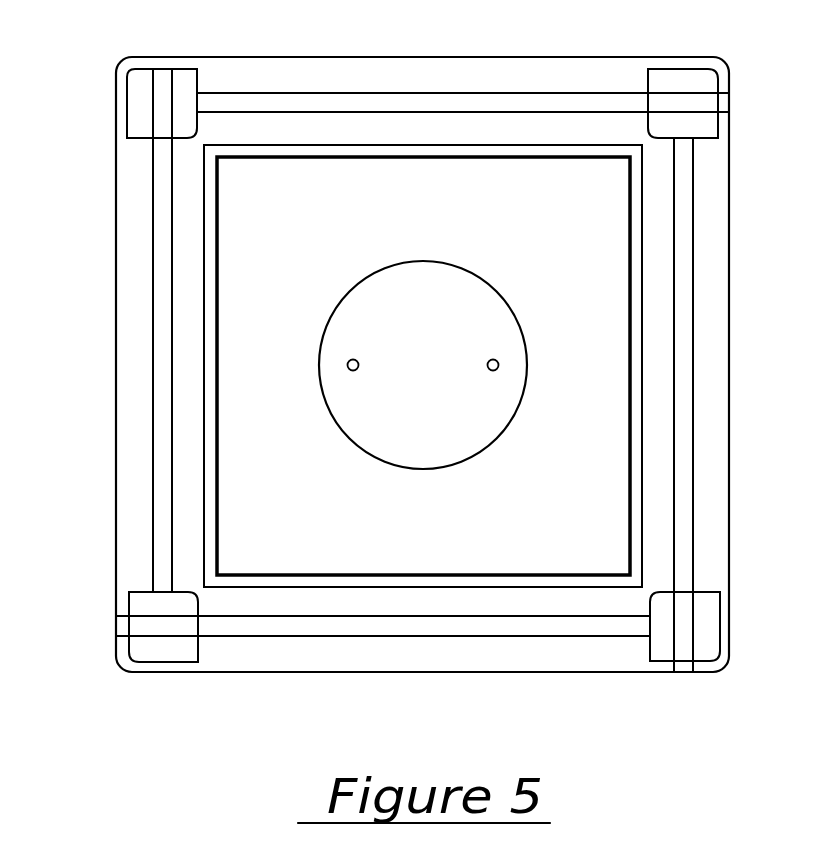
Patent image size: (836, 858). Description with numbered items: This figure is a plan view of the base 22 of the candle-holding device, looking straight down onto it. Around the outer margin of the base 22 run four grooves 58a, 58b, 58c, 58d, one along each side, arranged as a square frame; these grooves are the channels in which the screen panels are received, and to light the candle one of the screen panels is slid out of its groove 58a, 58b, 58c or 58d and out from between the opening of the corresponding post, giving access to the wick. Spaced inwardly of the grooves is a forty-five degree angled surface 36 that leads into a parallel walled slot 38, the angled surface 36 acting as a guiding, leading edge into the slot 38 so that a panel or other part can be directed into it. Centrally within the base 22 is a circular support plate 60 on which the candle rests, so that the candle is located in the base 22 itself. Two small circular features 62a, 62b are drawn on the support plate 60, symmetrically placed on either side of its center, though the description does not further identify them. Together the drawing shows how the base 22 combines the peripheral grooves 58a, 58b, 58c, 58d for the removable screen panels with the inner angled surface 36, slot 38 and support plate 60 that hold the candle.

The base 22 is at (267, 82).
The angled surface 36 is at (208, 308).
The parallel walled slot 38 is at (217, 240).
The groove 58a is at (418, 625).
The groove 58b is at (683, 367).
The groove 58c is at (473, 103).
The groove 58d is at (167, 352).
The support plate 60 is at (427, 305).
The hole 62a is at (350, 370).
The hole 62b is at (498, 360).